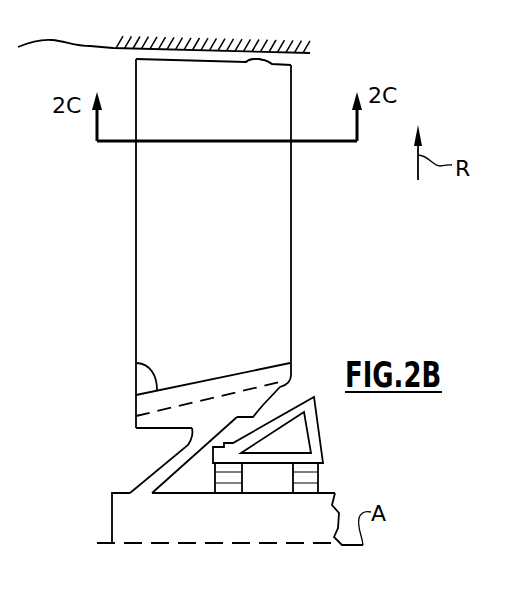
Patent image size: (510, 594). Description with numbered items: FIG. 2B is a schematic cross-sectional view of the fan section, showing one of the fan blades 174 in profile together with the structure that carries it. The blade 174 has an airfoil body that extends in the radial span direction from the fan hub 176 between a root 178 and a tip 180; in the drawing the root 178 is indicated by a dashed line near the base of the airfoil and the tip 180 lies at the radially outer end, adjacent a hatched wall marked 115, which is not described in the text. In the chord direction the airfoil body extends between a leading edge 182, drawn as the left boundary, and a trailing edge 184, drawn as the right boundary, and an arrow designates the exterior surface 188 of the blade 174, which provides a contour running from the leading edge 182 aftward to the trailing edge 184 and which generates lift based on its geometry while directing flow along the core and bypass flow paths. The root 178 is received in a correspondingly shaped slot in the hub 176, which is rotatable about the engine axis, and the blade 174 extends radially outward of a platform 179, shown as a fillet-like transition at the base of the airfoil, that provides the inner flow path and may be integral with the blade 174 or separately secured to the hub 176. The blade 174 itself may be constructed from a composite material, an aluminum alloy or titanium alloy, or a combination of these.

The blade outer air seal / casing 115 is at (115, 44).
The fan blade 174 is at (302, 263).
The fan hub 176 is at (158, 475).
The root 178 is at (143, 404).
The platform 179 is at (137, 363).
The tip 180 is at (255, 60).
The leading edge 182 is at (136, 217).
The trailing edge 184 is at (291, 182).
The exterior surface 188 is at (254, 237).